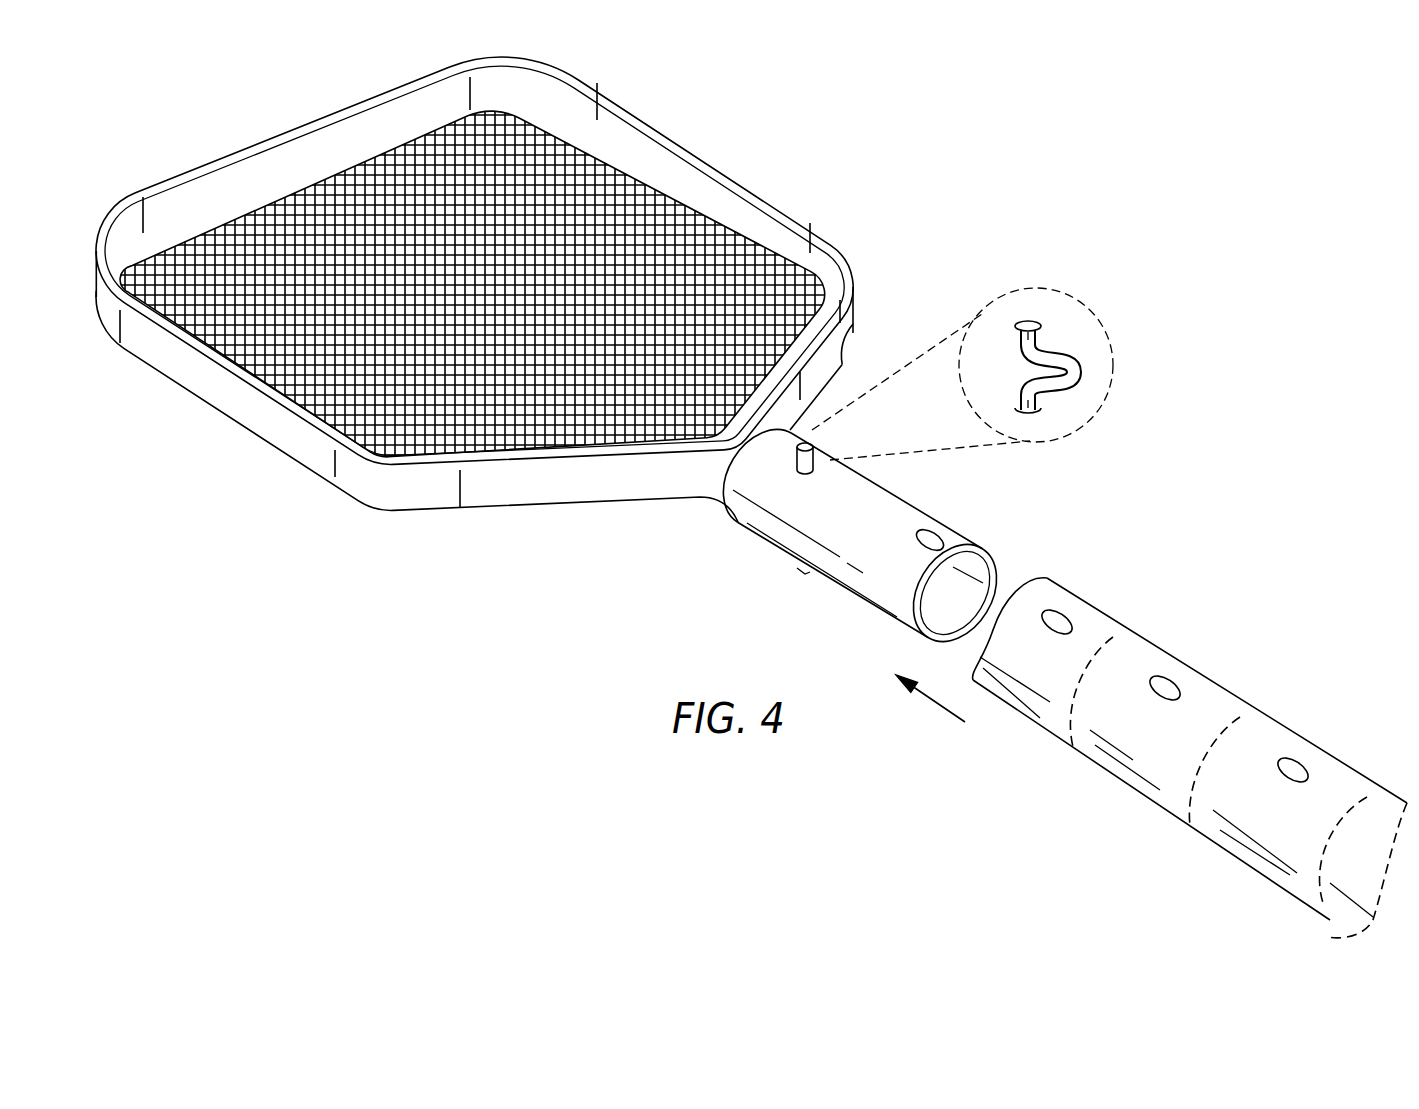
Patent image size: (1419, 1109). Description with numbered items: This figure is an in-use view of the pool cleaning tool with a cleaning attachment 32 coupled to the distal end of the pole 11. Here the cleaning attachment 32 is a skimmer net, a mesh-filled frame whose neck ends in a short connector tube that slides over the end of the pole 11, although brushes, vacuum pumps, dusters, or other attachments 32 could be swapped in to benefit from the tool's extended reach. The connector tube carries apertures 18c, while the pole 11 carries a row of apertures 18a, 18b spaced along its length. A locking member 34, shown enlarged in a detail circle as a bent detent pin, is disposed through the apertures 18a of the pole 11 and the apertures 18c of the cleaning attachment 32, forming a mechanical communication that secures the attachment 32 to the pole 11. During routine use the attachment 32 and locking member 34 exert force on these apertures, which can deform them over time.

The cleaning attachment 32 is at (272, 450).
The apertures of cleaning attachment 18c is at (748, 458).
The locking member 34 is at (1045, 340).
The pole 11 is at (1107, 768).
The apertures of pole 18a is at (1060, 612).
The apertures 18b is at (1167, 678).